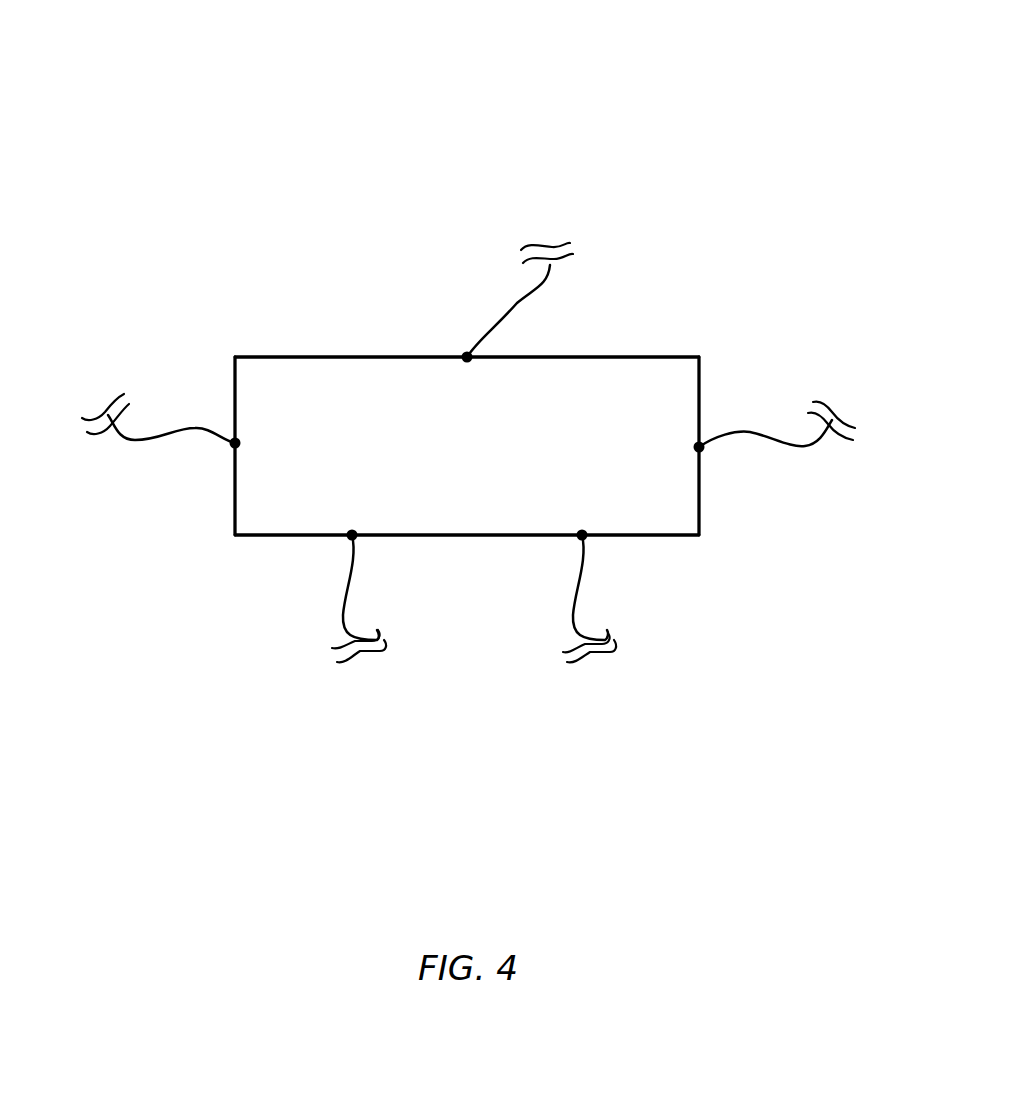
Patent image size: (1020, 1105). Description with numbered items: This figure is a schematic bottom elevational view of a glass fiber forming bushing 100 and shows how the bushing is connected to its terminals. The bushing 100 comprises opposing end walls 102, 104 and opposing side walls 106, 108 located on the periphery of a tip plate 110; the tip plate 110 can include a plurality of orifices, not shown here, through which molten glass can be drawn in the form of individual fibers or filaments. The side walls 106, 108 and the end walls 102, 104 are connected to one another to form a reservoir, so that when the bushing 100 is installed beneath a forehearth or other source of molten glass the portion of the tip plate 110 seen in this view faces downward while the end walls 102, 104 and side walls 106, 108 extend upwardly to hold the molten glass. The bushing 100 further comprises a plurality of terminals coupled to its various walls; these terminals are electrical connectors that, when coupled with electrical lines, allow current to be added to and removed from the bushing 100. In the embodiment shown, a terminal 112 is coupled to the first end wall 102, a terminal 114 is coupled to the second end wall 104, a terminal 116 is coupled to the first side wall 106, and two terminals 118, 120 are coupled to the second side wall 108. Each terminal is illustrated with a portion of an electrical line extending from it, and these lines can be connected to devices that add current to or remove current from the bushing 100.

The glass fiber forming bushing 100 is at (649, 110).
The first end wall 102 is at (233, 497).
The second end wall 104 is at (699, 497).
The first side wall 106 is at (587, 355).
The second side wall 108 is at (478, 535).
The tip plate 110 is at (325, 495).
The terminal 112 is at (177, 430).
The terminal 114 is at (747, 432).
The terminal 116 is at (467, 357).
The terminal 118 is at (352, 535).
The terminal 120 is at (582, 535).